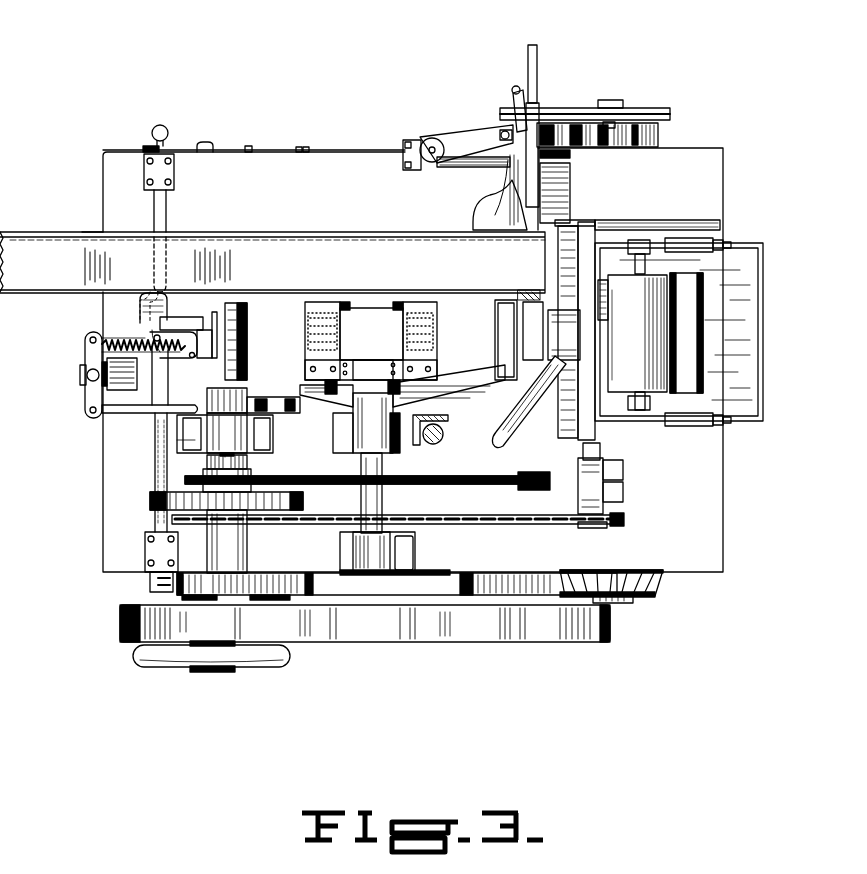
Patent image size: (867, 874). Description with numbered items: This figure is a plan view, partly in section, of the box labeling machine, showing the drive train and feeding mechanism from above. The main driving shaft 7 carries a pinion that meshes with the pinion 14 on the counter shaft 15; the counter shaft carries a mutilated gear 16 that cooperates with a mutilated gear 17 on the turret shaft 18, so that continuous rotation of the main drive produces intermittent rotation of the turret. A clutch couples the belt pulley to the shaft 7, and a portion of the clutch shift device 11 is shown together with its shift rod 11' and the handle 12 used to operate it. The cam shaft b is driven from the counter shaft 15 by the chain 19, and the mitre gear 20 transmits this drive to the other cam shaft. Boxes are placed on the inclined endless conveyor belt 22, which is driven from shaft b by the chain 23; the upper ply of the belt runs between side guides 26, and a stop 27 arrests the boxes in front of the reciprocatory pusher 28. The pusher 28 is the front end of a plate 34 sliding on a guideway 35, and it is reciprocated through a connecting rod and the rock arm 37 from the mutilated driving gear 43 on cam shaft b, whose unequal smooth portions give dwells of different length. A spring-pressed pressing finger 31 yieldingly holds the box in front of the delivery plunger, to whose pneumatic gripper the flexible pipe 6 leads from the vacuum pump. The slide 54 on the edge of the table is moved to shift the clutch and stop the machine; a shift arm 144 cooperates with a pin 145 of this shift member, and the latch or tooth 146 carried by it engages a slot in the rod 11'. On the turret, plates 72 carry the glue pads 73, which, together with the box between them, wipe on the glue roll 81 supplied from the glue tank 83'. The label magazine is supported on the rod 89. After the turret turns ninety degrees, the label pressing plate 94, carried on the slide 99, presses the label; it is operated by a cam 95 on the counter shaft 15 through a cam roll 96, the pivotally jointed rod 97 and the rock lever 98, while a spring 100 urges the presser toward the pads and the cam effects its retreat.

The flexible pipe 6 is at (515, 413).
The main driving shaft 7 is at (203, 475).
The clutch shift device 11 is at (133, 586).
The shift rod 11' is at (147, 238).
The handle 12 is at (165, 131).
The pinion 14 is at (175, 505).
The counter shaft 15 is at (240, 461).
The mutilated gear 16 is at (216, 584).
The mutilated gear 17 is at (405, 585).
The turret shaft 18 is at (372, 490).
The chain 19 is at (457, 485).
The mitre gear 20 is at (653, 577).
The endless conveyor belt 22 is at (272, 262).
The chain 23 is at (563, 112).
The side guides 26 is at (82, 232).
The stop 27 is at (545, 272).
The reciprocatory pusher 28 is at (527, 225).
The pressing finger 31 is at (537, 340).
The plate 34 is at (537, 152).
The guideway 35 is at (535, 153).
The rock arm 37 is at (452, 150).
The driving gear 43 is at (658, 134).
The slide 54 is at (340, 150).
The plates 72 is at (322, 360).
The glue pads 73 is at (323, 330).
The glue roll 81 is at (632, 325).
The glue tank 83' is at (694, 332).
The rod 89 is at (445, 432).
The label pressing plate 94 is at (213, 320).
The cam 95 is at (270, 408).
The cam roll 96 is at (300, 405).
The pivotally jointed rod 97 is at (148, 411).
The rock lever 98 is at (86, 392).
The slide 99 is at (176, 340).
The spring 100 is at (114, 340).
The shift arm 144 is at (300, 147).
The pin 145 is at (247, 146).
The latch 146 is at (148, 146).
The cam shaft b is at (610, 125).